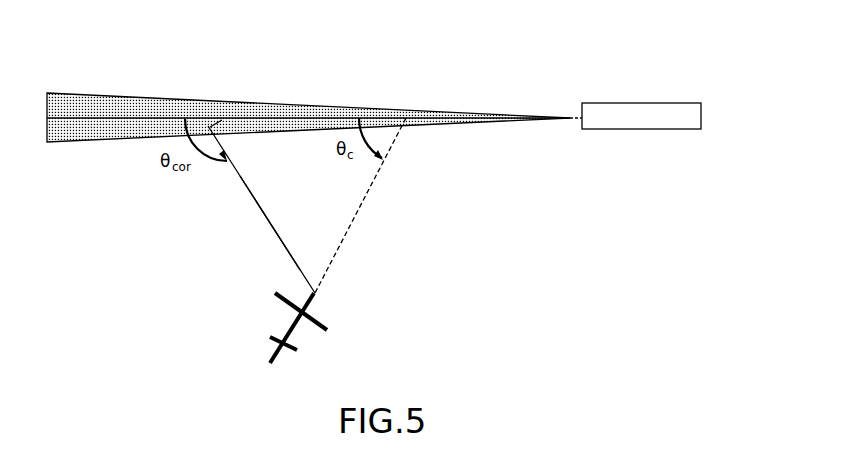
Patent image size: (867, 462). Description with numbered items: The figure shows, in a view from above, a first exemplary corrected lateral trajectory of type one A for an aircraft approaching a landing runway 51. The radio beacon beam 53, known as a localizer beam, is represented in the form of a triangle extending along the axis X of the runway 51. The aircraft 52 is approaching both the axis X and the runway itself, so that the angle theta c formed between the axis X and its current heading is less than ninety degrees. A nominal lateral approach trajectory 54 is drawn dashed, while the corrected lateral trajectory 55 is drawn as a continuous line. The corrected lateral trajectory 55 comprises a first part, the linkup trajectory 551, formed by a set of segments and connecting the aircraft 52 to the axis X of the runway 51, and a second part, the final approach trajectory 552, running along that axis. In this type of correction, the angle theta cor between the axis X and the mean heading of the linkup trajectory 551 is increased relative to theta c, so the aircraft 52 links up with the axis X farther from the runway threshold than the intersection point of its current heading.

The landing runway 51 is at (637, 129).
The aircraft 52 is at (327, 330).
The radio beacon beam 53 is at (93, 142).
The nominal lateral approach trajectory 54 is at (360, 208).
The corrected lateral trajectory 55 is at (251, 198).
The linkup trajectory 551 is at (273, 220).
The final approach trajectory 552 is at (222, 120).
The axis of the runway X is at (458, 118).